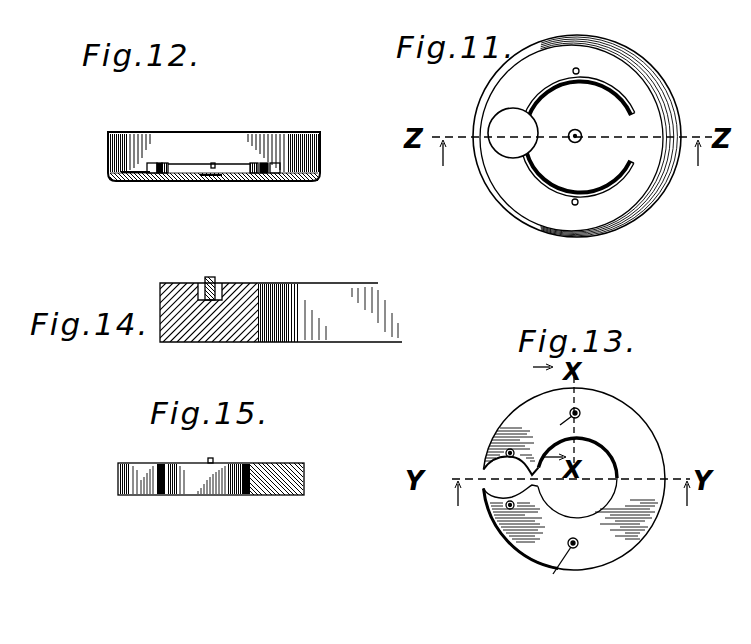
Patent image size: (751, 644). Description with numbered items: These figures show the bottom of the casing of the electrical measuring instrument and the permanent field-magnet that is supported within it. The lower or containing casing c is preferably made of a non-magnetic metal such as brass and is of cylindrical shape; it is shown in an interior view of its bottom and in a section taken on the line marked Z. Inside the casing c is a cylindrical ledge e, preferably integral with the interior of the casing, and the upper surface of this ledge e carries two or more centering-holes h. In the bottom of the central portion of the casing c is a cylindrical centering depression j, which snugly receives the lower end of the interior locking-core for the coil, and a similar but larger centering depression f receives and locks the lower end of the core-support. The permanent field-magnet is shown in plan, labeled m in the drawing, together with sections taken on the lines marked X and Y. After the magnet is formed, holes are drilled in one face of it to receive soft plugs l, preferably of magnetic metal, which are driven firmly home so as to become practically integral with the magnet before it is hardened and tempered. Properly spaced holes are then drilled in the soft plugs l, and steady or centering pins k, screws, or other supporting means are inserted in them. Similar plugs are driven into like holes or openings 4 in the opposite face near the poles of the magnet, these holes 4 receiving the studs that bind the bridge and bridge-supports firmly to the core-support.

In FIG. 12, the lower or containing casing c is at (196, 146).
In FIG. 11, the lower or containing casing c is at (520, 220).
In FIG. 12, the cylindrical ledge e is at (213, 155).
In FIG. 11, the cylindrical ledge e is at (578, 137).
In FIG. 12, the centering-holes h is at (214, 165).
In FIG. 11, the centering-holes h is at (573, 77).
In FIG. 12, the centering depression f is at (134, 173).
In FIG. 11, the centering depression f is at (505, 147).
In FIG. 12, the cylindrical centering depression j is at (212, 178).
In FIG. 11, the cylindrical centering depression j is at (582, 134).
In FIG. 14, the steady or centering pins k is at (204, 280).
In FIG. 15, the steady or centering pins k is at (206, 460).
In FIG. 13, the steady or centering pins k is at (596, 384).
In FIG. 14, the soft plugs l is at (222, 286).
In FIG. 13, the soft plugs l is at (554, 508).
In FIG. 14, the disk m is at (227, 340).
In FIG. 15, the disk m is at (273, 496).
In FIG. 13, the disk m is at (640, 432).
In FIG. 13, the holes or openings 4 is at (505, 452).